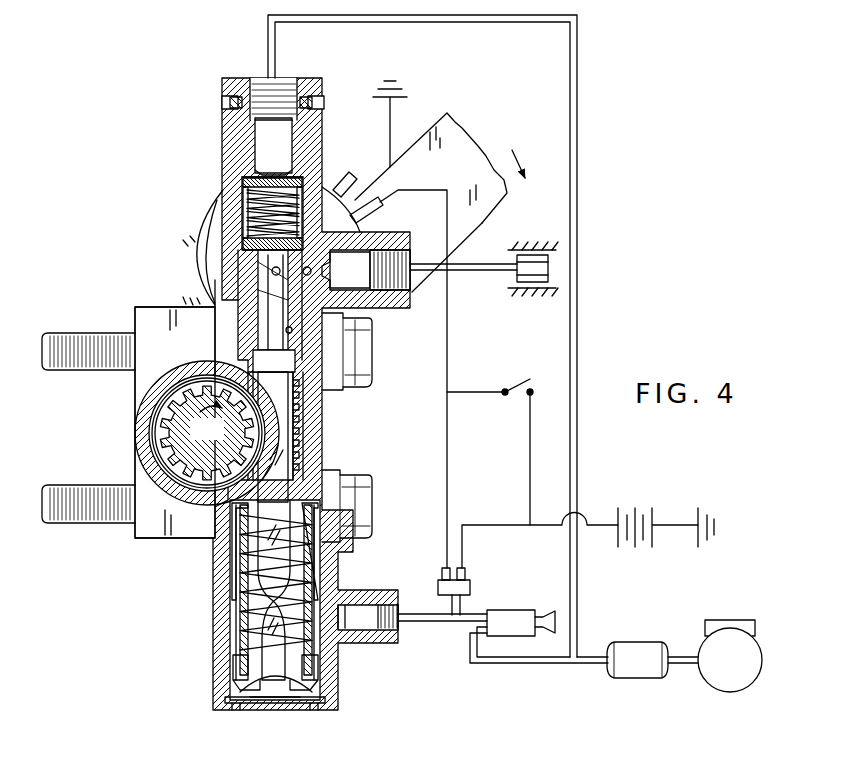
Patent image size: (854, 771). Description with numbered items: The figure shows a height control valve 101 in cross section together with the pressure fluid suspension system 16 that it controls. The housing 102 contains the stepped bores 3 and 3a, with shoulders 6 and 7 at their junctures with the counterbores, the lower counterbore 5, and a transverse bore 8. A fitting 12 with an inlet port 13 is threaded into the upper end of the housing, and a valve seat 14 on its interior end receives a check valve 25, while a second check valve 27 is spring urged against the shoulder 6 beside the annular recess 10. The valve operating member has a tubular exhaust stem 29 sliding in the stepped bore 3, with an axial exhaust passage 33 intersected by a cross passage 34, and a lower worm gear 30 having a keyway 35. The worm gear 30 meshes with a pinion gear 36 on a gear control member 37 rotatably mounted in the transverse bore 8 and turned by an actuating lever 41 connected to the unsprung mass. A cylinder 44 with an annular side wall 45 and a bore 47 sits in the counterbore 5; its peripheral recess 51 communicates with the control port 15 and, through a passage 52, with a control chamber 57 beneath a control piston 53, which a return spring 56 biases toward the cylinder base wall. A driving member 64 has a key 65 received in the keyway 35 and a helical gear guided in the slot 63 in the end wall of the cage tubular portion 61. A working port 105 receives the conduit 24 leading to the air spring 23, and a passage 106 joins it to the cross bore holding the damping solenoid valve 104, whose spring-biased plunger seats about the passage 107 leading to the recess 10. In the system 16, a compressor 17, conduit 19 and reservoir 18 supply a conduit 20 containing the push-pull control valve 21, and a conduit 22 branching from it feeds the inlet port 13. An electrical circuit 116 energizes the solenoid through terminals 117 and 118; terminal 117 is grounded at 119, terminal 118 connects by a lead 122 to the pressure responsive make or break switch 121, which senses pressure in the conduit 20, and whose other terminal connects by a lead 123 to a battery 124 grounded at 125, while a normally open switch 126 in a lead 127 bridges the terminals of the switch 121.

The height control valve 101 is at (205, 82).
The fitting 12 is at (310, 88).
The inlet passage or port 13 is at (257, 88).
The valve seat 14 is at (240, 166).
The unidirectional check valve 25 is at (245, 196).
The unidirectional check valve 27 is at (243, 243).
The damping solenoid valve 104 is at (223, 188).
The shoulder 6 is at (169, 242).
The annular recess or passage 10 is at (271, 271).
The passage 107 is at (268, 274).
The axial exhaust passage 33 is at (307, 276).
The tubular exhaust stem portion 29 is at (258, 326).
The stepped bore 3 is at (293, 330).
The cross passage 34 is at (274, 361).
The stepped bore 3a is at (305, 363).
The shoulder 7 is at (340, 507).
The key 65 is at (274, 428).
The driving member 64 is at (283, 507).
The slot or keyway 35 is at (300, 413).
The worm gear portion 30 is at (303, 443).
The transverse bore 8 is at (150, 433).
The gear control member 37 is at (160, 412).
The pinion gear 36 is at (217, 445).
The annular side wall 45 is at (236, 527).
The cylinder bore 47 is at (240, 615).
The guide slot or keyway 63 is at (272, 588).
The tubular portion 61 is at (240, 565).
The return spring 56 is at (310, 570).
The housing 102 is at (222, 588).
The annular recess 51 is at (233, 660).
The passage 52 is at (318, 678).
The control chamber 57 is at (300, 695).
The cylinder 44 is at (255, 703).
The control piston 53 is at (278, 695).
The control port 15 is at (398, 630).
The lower counterbore 5 is at (172, 270).
The passage 106 is at (366, 270).
The conduit 24 is at (476, 272).
The expansible air spring 23 is at (525, 255).
The working port 105 is at (412, 294).
The actuating lever or arm 41 is at (465, 150).
The ground 119 is at (398, 78).
The solenoid terminal 117 is at (345, 174).
The solenoid terminal 118 is at (384, 208).
The electrical circuit 116 is at (445, 447).
The lead 122 is at (448, 350).
The normally open switch 126 is at (521, 385).
The lead 127 is at (530, 440).
The lead 123 is at (490, 522).
The battery 124 is at (632, 510).
The ground 125 is at (720, 518).
The fluid pressure responsive electrical switch 121 is at (438, 586).
The push-pull control valve 21 is at (512, 616).
The conduit 20 is at (508, 665).
The conduit 22 is at (579, 305).
The reservoir 18 is at (637, 642).
The conduit 19 is at (685, 665).
The compressor 17 is at (740, 620).
The fluid pressure system 16 is at (550, 677).